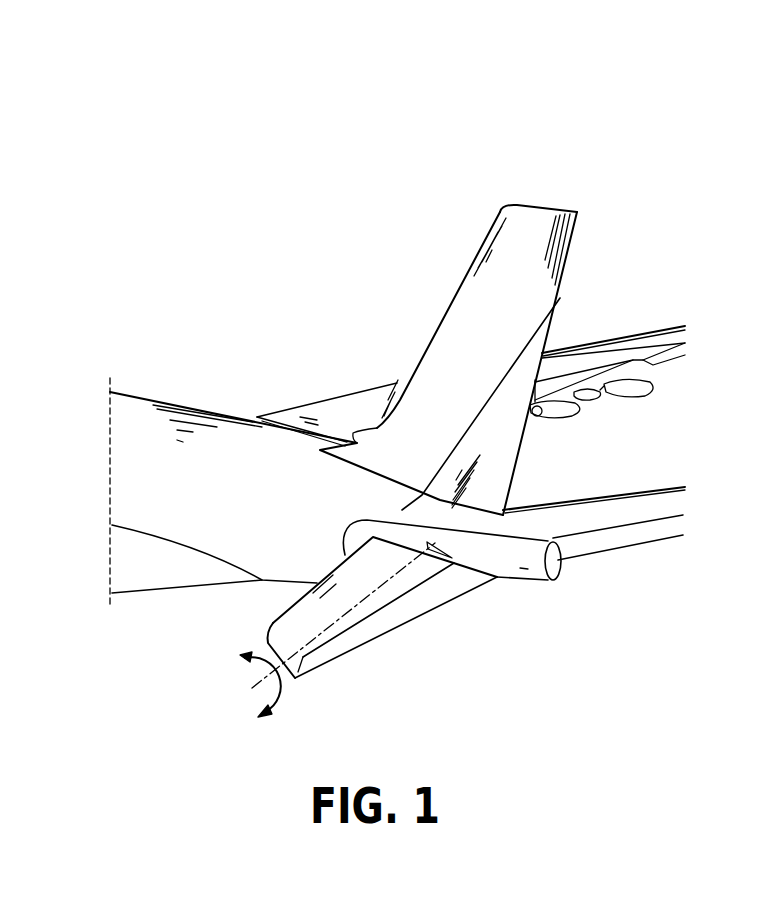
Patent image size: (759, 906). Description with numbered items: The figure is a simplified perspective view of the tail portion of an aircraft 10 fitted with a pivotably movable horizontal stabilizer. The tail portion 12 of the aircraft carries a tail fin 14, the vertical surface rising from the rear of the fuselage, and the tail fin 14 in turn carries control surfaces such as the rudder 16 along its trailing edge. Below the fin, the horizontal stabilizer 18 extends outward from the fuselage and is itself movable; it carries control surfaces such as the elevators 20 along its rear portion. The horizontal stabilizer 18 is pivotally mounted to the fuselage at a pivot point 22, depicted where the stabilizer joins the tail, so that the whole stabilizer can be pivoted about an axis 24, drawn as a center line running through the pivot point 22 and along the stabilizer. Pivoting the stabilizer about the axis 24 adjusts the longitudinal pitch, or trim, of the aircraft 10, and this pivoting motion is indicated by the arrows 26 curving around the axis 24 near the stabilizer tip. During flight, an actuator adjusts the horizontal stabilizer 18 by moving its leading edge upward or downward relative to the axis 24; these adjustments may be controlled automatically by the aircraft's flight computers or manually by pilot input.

The aircraft 10 is at (238, 352).
The tail portion 12 is at (145, 438).
The tail fin 14 is at (538, 258).
The rudder 16 is at (498, 462).
The horizontal stabilizer 18 is at (380, 595).
The elevators 20 is at (357, 638).
The pivot point 22 is at (432, 546).
The axis 24 is at (255, 683).
The arrows 26 is at (280, 695).